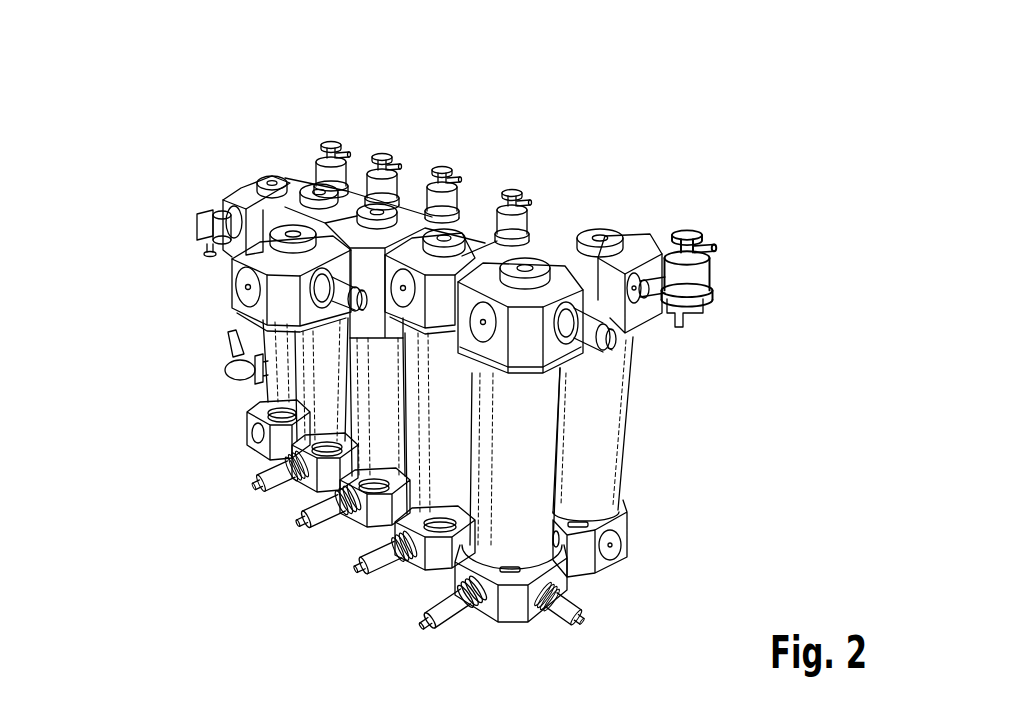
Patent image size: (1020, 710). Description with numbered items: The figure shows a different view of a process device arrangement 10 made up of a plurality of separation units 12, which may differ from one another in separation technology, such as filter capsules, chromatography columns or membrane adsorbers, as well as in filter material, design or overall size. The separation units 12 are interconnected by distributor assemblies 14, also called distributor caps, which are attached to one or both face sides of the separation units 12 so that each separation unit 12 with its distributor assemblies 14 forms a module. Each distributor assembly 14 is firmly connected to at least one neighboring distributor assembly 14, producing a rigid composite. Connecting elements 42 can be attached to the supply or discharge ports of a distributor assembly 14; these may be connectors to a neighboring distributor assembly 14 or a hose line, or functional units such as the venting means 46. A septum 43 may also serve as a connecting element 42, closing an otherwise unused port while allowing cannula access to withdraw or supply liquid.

The process device arrangement 10 is at (689, 198).
The separation unit 12 is at (605, 402).
The distributor assembly 14 is at (233, 193).
The connecting element 42 is at (697, 280).
The septum 43 is at (628, 540).
The venting means 46 is at (677, 278).